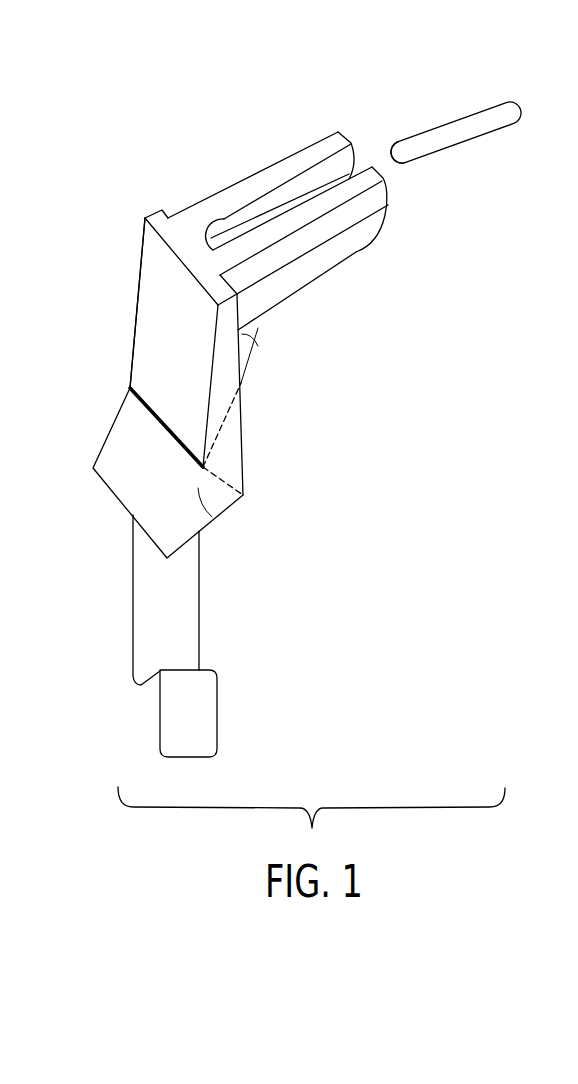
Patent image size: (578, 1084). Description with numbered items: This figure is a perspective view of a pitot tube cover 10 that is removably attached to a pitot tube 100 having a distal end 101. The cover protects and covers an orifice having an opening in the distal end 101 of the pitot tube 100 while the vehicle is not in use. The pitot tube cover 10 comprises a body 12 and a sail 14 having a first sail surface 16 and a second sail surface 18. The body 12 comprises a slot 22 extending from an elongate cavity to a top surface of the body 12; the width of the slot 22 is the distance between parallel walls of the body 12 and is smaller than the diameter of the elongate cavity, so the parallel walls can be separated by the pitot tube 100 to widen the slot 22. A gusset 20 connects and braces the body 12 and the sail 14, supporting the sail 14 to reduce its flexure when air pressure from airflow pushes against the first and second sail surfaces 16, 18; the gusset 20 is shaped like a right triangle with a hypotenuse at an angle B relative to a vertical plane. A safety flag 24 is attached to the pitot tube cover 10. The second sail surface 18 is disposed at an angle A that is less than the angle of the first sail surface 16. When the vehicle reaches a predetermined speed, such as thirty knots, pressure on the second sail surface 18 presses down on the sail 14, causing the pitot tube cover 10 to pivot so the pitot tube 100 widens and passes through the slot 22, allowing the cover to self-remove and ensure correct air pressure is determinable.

The pitot tube cover 10 is at (221, 435).
The body 12 is at (278, 221).
The sail 14 is at (118, 280).
The first sail surface 16 is at (138, 320).
The second sail surface 18 is at (119, 425).
The gusset 20 is at (256, 331).
The slot 22 is at (300, 180).
The safety flag 24 is at (188, 640).
The pitot tube 100 is at (447, 176).
The distal end 101 is at (418, 165).